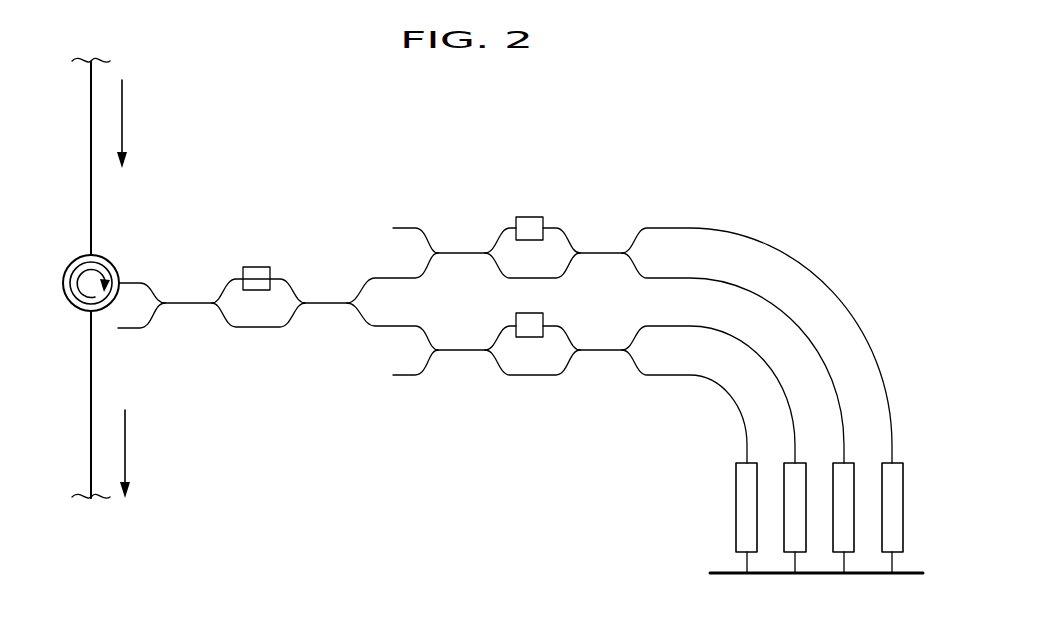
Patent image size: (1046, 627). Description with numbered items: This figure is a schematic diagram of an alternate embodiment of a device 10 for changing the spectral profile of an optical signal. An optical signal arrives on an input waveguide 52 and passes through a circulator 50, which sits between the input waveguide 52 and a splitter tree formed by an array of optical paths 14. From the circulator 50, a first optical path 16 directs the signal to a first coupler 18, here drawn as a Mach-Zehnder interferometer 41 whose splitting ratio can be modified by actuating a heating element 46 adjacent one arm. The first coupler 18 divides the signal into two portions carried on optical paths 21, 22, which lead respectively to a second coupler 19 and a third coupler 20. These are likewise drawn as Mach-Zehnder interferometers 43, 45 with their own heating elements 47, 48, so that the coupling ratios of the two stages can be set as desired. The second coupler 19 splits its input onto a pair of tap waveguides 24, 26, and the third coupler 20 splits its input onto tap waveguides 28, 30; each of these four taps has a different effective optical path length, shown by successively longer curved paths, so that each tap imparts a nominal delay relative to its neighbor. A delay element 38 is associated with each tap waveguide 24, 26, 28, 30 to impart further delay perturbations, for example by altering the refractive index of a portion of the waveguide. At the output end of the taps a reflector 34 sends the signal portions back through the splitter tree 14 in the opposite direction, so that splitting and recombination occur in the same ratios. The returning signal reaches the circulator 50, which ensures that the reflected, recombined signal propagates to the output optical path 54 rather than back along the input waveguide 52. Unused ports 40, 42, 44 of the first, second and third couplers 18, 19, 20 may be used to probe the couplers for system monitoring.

The device 10 is at (400, 482).
The array of optical paths 14 is at (744, 184).
The first optical path 16 is at (150, 282).
The first coupler 18 is at (258, 288).
The second coupler 19 is at (507, 216).
The third coupler 20 is at (507, 360).
The optical path 21 is at (392, 276).
The optical path 22 is at (386, 328).
The tap waveguide 24 is at (695, 227).
The tap waveguide 26 is at (700, 277).
The tap waveguide 28 is at (695, 325).
The tap waveguide 30 is at (700, 375).
The reflector 34 is at (718, 572).
The delay element 38 is at (735, 493).
The port 40 is at (121, 330).
The Mach-Zehnder interferometer 41 is at (247, 330).
The port 42 is at (401, 226).
The Mach-Zehnder interferometer 43 is at (563, 226).
The port 44 is at (402, 378).
The Mach-Zehnder interferometer 45 is at (507, 378).
The heating element 46 is at (265, 291).
The heating element 47 is at (529, 216).
The heating element 48 is at (533, 313).
The circulator 50 is at (75, 259).
The input waveguide 52 is at (92, 198).
The output optical path 54 is at (90, 404).